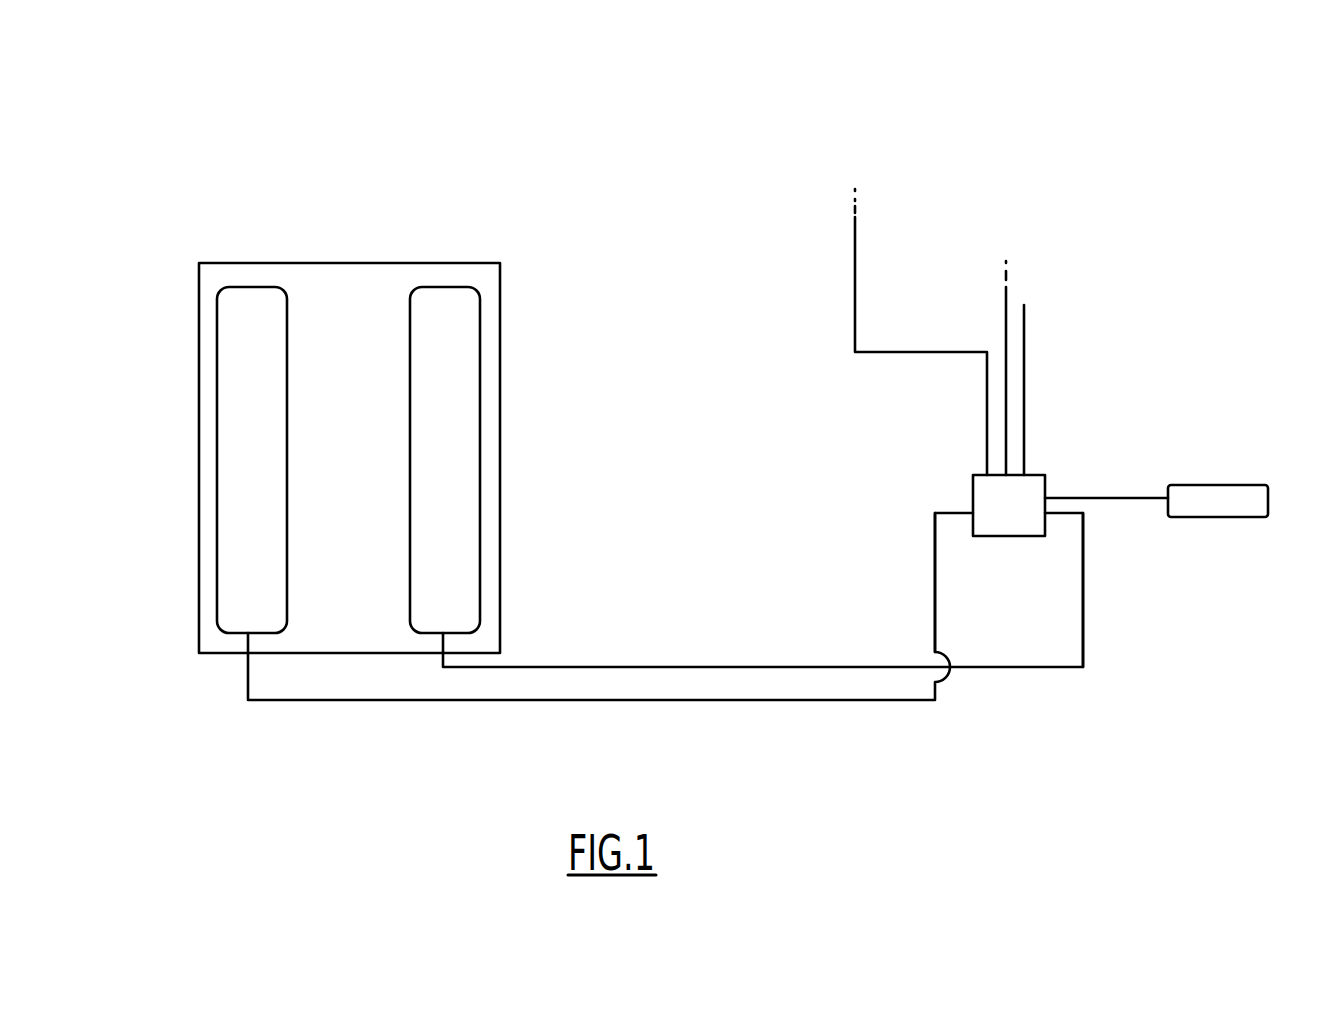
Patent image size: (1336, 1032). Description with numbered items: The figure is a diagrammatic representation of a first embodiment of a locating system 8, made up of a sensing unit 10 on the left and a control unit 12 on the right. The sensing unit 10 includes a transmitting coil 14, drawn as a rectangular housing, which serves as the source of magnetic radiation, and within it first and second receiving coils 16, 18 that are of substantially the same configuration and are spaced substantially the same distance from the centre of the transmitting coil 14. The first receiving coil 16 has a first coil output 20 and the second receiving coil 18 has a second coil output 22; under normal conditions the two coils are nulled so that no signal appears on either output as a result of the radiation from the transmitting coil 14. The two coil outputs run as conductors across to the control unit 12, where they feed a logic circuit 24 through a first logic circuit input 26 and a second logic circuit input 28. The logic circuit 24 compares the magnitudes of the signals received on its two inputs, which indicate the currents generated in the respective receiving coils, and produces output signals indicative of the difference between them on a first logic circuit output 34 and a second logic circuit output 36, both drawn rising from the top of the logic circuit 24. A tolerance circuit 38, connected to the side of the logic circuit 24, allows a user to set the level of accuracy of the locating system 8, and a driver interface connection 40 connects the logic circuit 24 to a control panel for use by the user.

The locating system 8 is at (834, 121).
The sensing unit 10 is at (570, 394).
The control unit 12 is at (1212, 317).
The transmitting coil 14 is at (383, 262).
The first receiving coil 16 is at (222, 290).
The second receiving coil 18 is at (475, 290).
The first coil output 20 is at (245, 640).
The second coil output 22 is at (445, 645).
The logic circuit 24 is at (1046, 475).
The first logic circuit input 26 is at (944, 512).
The second logic circuit input 28 is at (1079, 521).
The first logic circuit output 34 is at (1005, 330).
The second logic circuit output 36 is at (1025, 340).
The tolerance circuit 38 is at (1211, 485).
The driver interface connection 40 is at (855, 300).